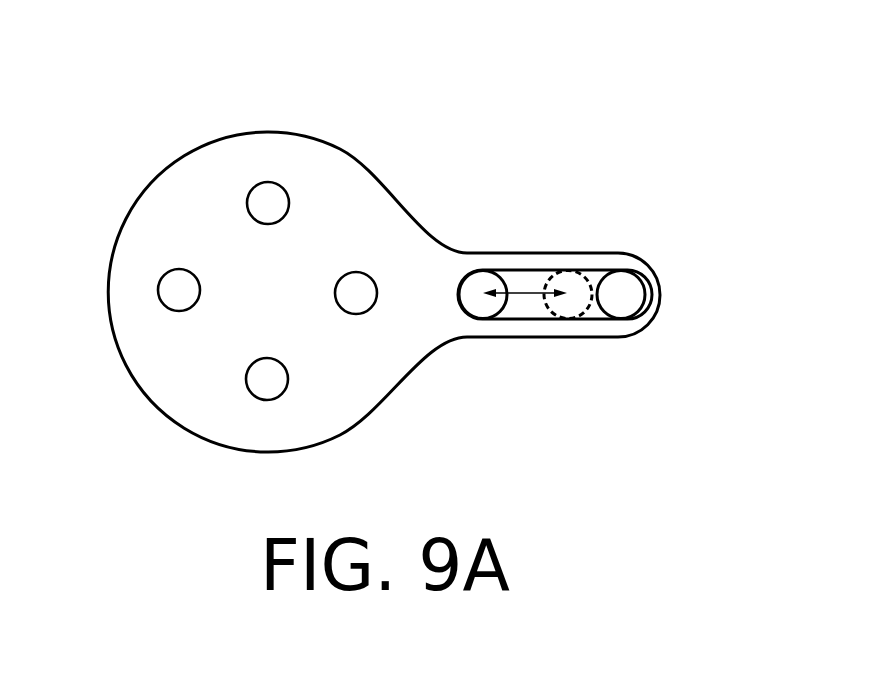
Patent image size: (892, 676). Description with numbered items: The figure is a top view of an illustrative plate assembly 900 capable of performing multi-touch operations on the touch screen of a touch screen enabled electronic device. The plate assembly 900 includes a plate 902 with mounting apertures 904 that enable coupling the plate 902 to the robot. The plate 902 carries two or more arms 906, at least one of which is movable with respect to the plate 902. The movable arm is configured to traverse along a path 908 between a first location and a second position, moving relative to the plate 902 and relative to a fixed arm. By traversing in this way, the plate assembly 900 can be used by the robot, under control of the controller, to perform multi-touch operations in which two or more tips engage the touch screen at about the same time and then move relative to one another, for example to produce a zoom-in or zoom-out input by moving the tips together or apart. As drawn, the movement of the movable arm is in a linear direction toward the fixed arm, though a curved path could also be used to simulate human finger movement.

The plate assembly 900 is at (206, 34).
The plate 902 is at (180, 158).
The mounting apertures 904 is at (157, 288).
The arms 906 is at (567, 180).
The path 908 is at (522, 319).